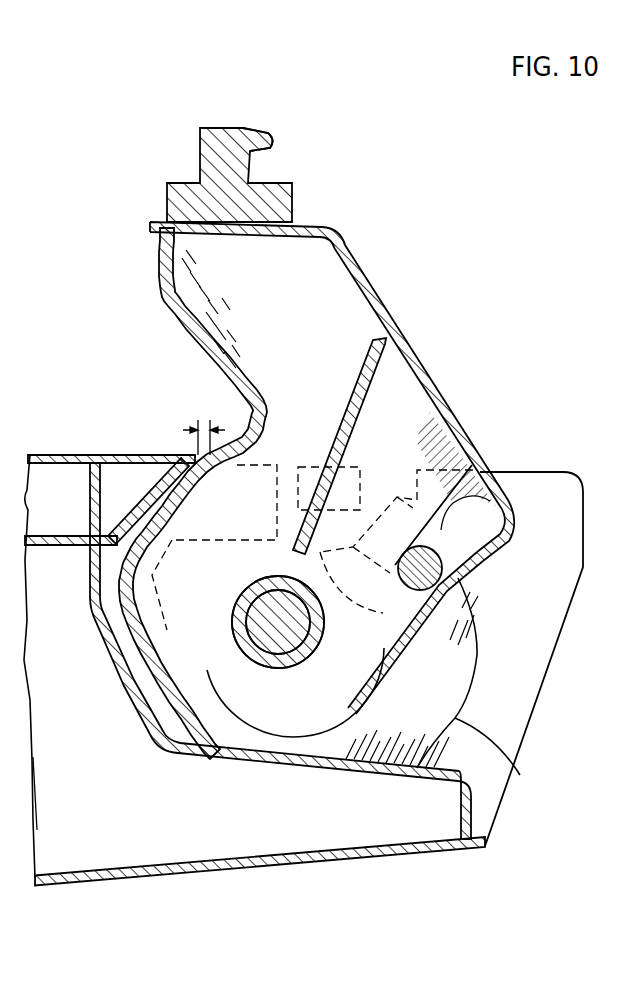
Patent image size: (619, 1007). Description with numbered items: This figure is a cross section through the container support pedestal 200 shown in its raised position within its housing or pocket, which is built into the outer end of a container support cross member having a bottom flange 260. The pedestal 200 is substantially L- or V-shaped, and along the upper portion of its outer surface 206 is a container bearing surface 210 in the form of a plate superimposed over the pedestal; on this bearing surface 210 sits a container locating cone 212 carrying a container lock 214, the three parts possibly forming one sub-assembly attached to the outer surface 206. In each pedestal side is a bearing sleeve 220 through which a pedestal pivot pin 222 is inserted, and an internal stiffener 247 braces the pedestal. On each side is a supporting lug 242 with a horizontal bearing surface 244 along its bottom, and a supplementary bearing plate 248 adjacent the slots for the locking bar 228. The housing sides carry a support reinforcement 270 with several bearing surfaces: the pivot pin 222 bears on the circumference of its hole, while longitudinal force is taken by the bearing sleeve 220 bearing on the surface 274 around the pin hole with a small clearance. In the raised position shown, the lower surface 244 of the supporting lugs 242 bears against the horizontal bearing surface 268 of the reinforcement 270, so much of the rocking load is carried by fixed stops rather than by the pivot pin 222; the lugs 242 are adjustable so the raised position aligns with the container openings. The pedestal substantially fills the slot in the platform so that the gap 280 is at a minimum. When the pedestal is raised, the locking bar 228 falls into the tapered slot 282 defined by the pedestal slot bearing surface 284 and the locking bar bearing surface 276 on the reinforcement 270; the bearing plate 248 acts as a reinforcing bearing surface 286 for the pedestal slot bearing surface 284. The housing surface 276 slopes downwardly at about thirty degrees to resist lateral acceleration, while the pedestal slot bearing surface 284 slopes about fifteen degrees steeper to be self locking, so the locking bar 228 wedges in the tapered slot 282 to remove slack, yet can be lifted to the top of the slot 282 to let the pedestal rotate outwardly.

The pedestal 200 is at (408, 262).
The outer surface 206 is at (385, 310).
The container bearing surface 210 is at (281, 186).
The container locating cone 212 is at (222, 128).
The container lock 214 is at (268, 138).
The bearing sleeve 220 is at (233, 648).
The pedestal pivot pin 222 is at (277, 628).
The locking bar 228 is at (458, 568).
The supporting lug 242 is at (262, 460).
The horizontal bearing surface 244 is at (175, 478).
The internal stiffener 247 is at (370, 380).
The supplementary bearing plate 248 is at (372, 517).
The bottom flange 260 is at (473, 851).
The horizontal bearing surface 268 is at (225, 543).
The support reinforcement 270 is at (462, 713).
The bearing surface around pin hole 274 is at (263, 667).
The locking bar bearing surface 276 is at (469, 566).
The gap 280 is at (210, 535).
The tapered slot 282 is at (400, 583).
The pedestal slot bearing surface 284 is at (445, 522).
The reinforcing bearing surface 286 is at (417, 533).